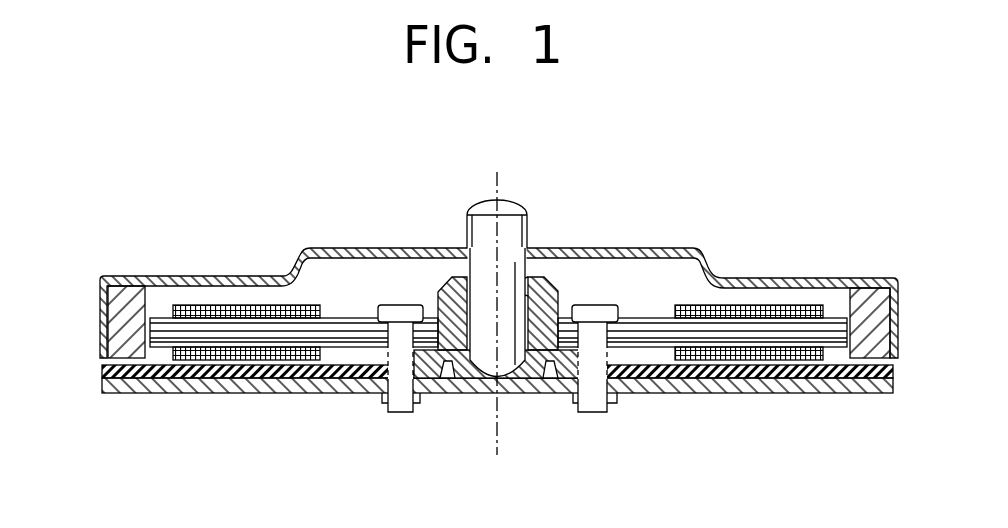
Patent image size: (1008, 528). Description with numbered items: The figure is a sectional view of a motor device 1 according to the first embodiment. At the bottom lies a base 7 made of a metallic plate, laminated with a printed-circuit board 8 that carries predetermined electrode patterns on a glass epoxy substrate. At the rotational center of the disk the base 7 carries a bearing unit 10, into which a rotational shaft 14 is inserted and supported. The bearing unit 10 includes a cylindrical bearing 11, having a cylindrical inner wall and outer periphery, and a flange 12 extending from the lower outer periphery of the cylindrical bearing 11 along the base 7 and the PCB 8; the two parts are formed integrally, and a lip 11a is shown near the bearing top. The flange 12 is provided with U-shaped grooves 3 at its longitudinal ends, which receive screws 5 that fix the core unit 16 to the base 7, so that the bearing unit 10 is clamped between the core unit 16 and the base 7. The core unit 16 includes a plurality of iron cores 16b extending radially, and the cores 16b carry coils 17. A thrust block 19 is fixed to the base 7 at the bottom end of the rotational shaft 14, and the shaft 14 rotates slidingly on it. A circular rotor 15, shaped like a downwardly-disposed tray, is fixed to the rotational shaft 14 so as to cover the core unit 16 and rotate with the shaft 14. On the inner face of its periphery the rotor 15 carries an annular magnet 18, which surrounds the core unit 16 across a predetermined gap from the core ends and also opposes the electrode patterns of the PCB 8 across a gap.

The motor device 1 is at (471, 315).
The U-shaped groove 3 is at (615, 397).
The screw 5 is at (396, 413).
The base 7 is at (108, 392).
The printed-circuit board 8 is at (102, 372).
The bearing unit 10 is at (436, 278).
The cylindrical bearing 11 is at (559, 295).
The bearing flange 11a is at (532, 266).
The flange 12 is at (560, 395).
The rotational shaft 14 is at (520, 207).
The rotor 15 is at (352, 249).
The core unit 16 is at (520, 296).
The iron core 16b is at (198, 330).
The coil 17 is at (272, 310).
The magnet 18 is at (118, 312).
The thrust block 19 is at (475, 395).